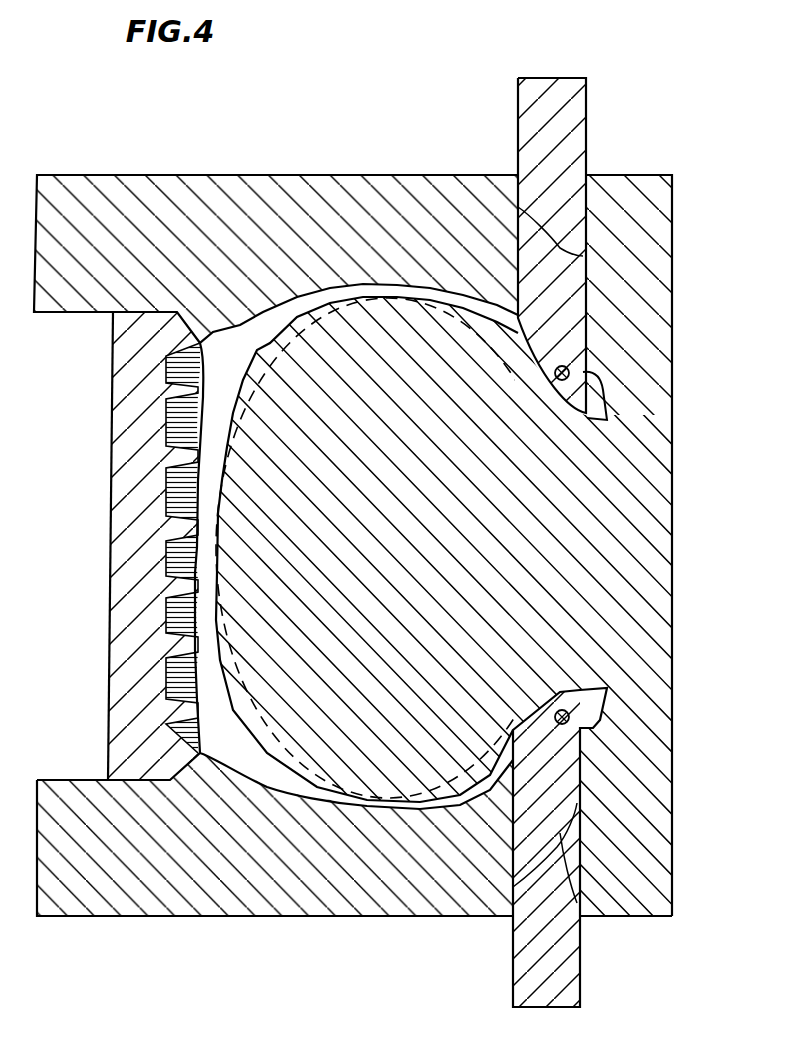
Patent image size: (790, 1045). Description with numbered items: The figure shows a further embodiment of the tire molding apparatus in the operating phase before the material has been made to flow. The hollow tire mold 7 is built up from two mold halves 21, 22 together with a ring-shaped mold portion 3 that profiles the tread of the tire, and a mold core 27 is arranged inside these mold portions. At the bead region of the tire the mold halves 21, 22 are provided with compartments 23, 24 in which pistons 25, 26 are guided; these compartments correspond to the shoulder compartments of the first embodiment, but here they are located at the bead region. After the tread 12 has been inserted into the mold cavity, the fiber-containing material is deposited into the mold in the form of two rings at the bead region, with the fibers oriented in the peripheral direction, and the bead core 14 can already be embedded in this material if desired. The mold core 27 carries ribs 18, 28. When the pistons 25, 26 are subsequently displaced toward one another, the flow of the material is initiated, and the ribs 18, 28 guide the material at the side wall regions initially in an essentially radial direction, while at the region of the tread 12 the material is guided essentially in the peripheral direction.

The ring-shaped mold portion 3 is at (118, 622).
The hollow tire mold 7 is at (470, 307).
The tread 12 is at (177, 548).
The bead core 14 is at (553, 360).
The rib 18 is at (320, 307).
The mold half 21 is at (232, 908).
The mold half 22 is at (137, 188).
The compartment 23 is at (582, 914).
The compartment 24 is at (583, 256).
The piston 25 is at (523, 947).
The piston 26 is at (533, 157).
The mold core 27 is at (280, 650).
The rib 28 is at (227, 470).